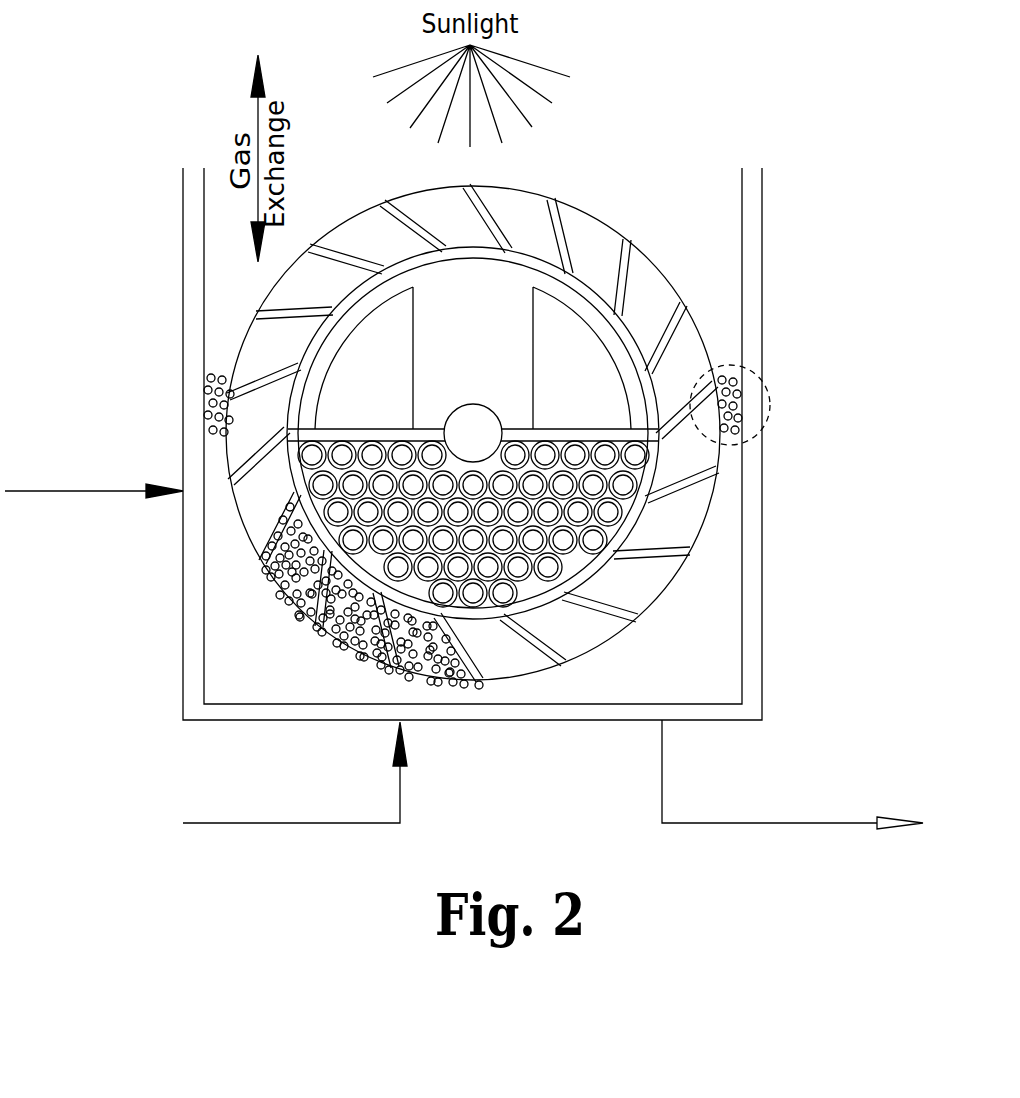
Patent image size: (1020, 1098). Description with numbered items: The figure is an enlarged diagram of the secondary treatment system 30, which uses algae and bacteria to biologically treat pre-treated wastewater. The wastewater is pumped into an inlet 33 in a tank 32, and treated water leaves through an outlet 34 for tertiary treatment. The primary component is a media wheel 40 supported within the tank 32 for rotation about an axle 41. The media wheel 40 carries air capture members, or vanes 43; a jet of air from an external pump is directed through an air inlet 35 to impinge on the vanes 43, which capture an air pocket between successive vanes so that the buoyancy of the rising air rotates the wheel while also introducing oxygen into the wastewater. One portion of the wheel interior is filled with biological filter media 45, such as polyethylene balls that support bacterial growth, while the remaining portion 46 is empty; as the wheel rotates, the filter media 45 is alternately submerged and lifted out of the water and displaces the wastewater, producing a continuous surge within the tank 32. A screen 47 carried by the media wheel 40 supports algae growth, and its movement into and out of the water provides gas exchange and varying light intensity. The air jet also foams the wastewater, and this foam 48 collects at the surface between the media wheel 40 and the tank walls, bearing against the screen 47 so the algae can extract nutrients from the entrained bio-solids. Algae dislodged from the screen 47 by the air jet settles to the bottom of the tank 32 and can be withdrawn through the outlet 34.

The secondary treatment system 30 is at (152, 125).
The tank 32 is at (183, 212).
The inlet 33 is at (183, 468).
The outlet 34 is at (660, 722).
The air inlet 35 is at (403, 722).
The media wheel 40 is at (595, 245).
The axle 41 is at (473, 404).
The vanes 43 is at (690, 489).
The biological filter media 45 is at (308, 480).
The empty portion 46 is at (382, 355).
The screen 47 is at (503, 188).
The foam 48 is at (770, 405).